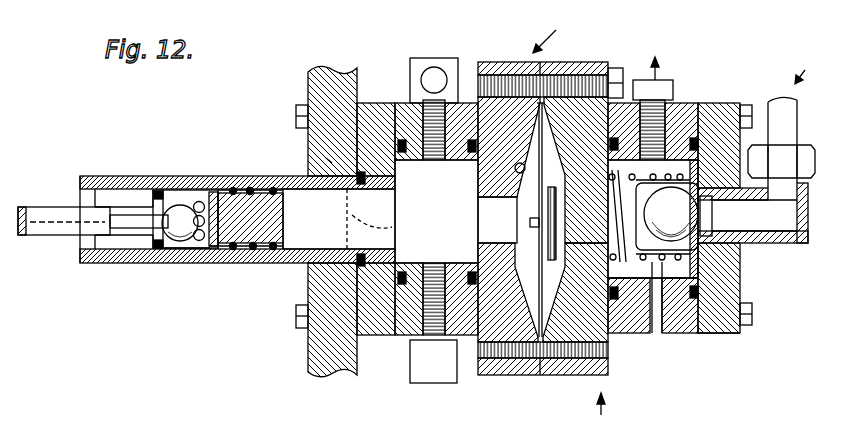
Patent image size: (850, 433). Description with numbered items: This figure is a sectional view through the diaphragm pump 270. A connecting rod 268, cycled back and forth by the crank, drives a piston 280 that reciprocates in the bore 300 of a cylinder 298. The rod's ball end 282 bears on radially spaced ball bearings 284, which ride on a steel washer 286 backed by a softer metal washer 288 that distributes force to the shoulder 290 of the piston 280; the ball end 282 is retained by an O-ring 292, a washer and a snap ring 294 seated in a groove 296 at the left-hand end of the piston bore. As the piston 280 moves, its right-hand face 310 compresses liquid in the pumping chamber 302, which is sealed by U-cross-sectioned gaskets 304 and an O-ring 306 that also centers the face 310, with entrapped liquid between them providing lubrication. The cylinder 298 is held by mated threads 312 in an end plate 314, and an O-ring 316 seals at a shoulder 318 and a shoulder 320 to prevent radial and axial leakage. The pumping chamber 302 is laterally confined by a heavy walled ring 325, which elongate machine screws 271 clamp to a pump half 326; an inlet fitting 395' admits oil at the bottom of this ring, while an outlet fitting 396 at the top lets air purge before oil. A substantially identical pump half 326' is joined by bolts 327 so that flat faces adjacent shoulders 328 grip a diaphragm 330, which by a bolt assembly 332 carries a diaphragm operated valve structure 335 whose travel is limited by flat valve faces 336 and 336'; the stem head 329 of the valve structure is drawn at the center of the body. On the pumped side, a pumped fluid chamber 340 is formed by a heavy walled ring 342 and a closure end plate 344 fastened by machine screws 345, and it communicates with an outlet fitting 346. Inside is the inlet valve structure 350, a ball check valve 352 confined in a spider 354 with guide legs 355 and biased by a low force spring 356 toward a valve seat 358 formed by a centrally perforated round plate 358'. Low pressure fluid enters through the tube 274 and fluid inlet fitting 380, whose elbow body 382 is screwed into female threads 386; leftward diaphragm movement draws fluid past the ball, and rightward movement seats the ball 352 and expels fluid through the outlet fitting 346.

The connecting rod 268 is at (40, 210).
The diaphragm pump 270 is at (554, 31).
The elongate machine screws 271 is at (296, 110).
The tube 274 is at (794, 121).
The piston 280 is at (213, 248).
The ball end 282 is at (167, 197).
The ball bearings 284 is at (204, 190).
The steel washer 286 is at (213, 200).
The softer metal washer 288 is at (224, 183).
The shoulder 290 is at (228, 250).
The O-ring 292 is at (175, 249).
The snap ring 294 is at (155, 242).
The groove 296 is at (155, 195).
The cylinder 298 is at (254, 250).
The bore 300 is at (283, 262).
The pumping chamber 302 is at (384, 242).
The U-cross-sectioned gaskets 304 is at (236, 250).
The O-ring 306 is at (285, 236).
The face 310 is at (398, 188).
The mated threads 312 is at (393, 190).
The end plate 314 is at (366, 103).
The O-ring 316 is at (362, 172).
The shoulder 318 is at (360, 265).
The shoulder 320 is at (330, 160).
The heavy walled ring 325 is at (462, 100).
The pump half 326 is at (542, 194).
The pump half 326' is at (544, 191).
The bolts 327 is at (620, 70).
The shoulders / O-rings 328 is at (400, 158).
The stem head 329 is at (546, 106).
The diaphragm 330 is at (539, 152).
The bolt assembly 332 is at (531, 226).
The diaphragm operated valve structure 335 is at (520, 205).
The flat valve face 336 is at (543, 219).
The flat valve face 336' is at (579, 223).
The pumped fluid chamber 340 is at (627, 274).
The heavy walled ring 342 is at (680, 330).
The closure end plate 344 is at (740, 300).
The machine screws 345 is at (752, 108).
The outlet fitting 346 is at (668, 82).
The inlet valve structure 350 is at (614, 172).
The ball check valve / valve ball 352 is at (667, 216).
The spider 354 is at (626, 232).
The guide legs 355 is at (654, 333).
The low force spring 356 is at (663, 333).
The valve seat 358 is at (753, 215).
The centrally perforated round plate 358' is at (731, 362).
The fluid inlet fitting 380 is at (815, 156).
The elbow body 382 is at (812, 243).
The female threads 386 is at (736, 262).
The inlet fitting 395' is at (414, 377).
The nut 396 is at (418, 58).